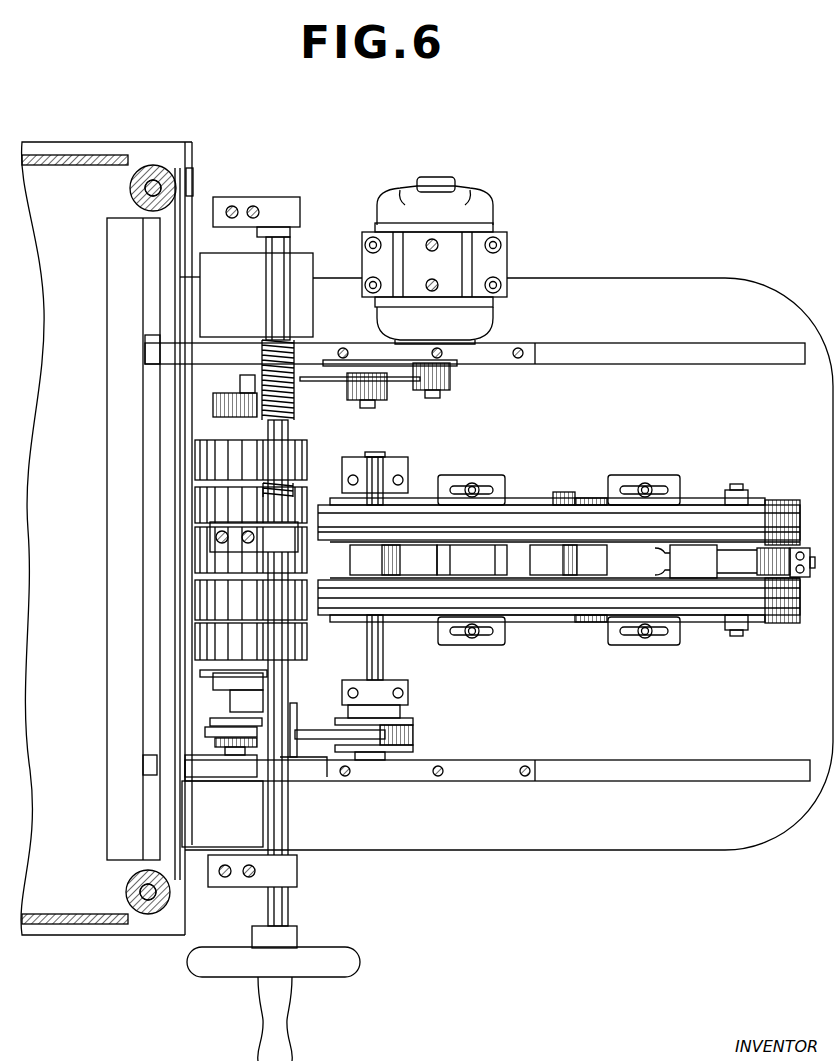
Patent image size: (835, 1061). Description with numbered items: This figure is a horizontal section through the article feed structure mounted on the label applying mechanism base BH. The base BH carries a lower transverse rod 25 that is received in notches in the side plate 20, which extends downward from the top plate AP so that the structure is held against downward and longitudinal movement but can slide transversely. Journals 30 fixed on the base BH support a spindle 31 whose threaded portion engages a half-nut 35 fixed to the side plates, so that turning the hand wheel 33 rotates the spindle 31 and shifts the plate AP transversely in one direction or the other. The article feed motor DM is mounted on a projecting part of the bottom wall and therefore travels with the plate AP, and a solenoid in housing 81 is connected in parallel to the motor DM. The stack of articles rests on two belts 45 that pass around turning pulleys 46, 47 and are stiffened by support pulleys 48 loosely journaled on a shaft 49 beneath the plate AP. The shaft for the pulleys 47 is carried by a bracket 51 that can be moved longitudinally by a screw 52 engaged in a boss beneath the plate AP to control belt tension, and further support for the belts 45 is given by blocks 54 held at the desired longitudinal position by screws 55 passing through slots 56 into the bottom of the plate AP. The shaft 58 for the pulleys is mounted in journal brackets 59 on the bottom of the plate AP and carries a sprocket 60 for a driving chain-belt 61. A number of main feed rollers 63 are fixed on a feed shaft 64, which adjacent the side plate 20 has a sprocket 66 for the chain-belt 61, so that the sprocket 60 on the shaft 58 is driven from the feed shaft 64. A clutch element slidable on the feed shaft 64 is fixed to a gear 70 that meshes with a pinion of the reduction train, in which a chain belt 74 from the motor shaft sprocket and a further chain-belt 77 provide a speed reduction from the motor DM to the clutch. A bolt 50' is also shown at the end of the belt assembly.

The applying mechanism base BH is at (83, 900).
The top plate AP is at (722, 293).
The article feed motor DM is at (487, 216).
The side plate 20 is at (681, 776).
The lower transverse rod 25 is at (668, 347).
The journal 30 is at (293, 206).
The spindle 31 is at (295, 413).
The hand wheel 33 is at (350, 976).
The half-nut 35 is at (308, 365).
The belt 45 is at (695, 522).
The turning pulley 46 is at (338, 540).
The turning pulley 47 is at (765, 500).
The support pulley 48 is at (585, 498).
The shaft 49 is at (562, 493).
The bolt 50' is at (739, 538).
The bracket 51 is at (722, 563).
The screw 52 is at (775, 579).
The block 54 is at (492, 483).
The screw 55 is at (475, 485).
The slot 56 is at (508, 491).
The shaft 58 is at (367, 478).
The journal bracket 59 is at (395, 461).
The sprocket 60 is at (415, 749).
The driving chain-belt 61 is at (300, 731).
The main feed roller 63 is at (195, 543).
The feed shaft 64 is at (240, 701).
The sprocket 66 is at (210, 751).
The gear 70 is at (222, 397).
The chain belt 74 is at (408, 378).
The chain-belt 77 is at (378, 400).
The housing 81 is at (305, 263).